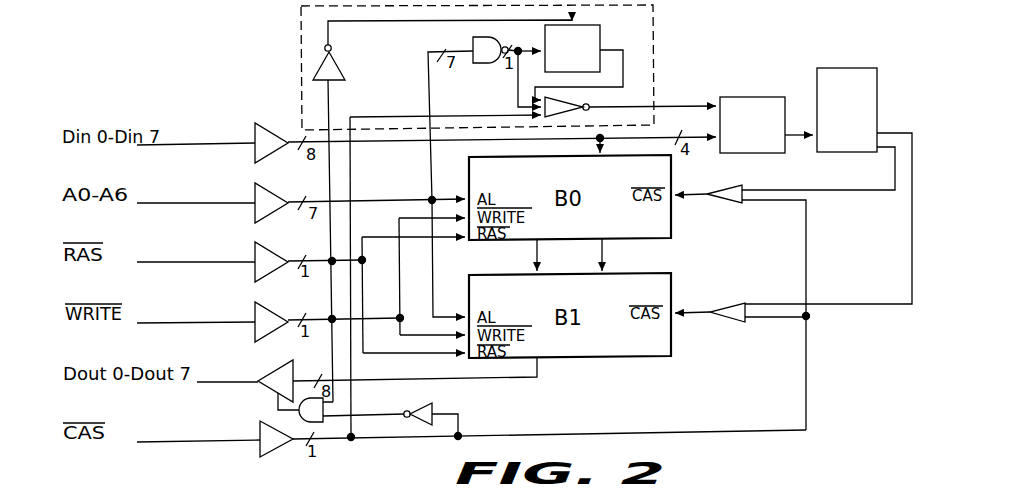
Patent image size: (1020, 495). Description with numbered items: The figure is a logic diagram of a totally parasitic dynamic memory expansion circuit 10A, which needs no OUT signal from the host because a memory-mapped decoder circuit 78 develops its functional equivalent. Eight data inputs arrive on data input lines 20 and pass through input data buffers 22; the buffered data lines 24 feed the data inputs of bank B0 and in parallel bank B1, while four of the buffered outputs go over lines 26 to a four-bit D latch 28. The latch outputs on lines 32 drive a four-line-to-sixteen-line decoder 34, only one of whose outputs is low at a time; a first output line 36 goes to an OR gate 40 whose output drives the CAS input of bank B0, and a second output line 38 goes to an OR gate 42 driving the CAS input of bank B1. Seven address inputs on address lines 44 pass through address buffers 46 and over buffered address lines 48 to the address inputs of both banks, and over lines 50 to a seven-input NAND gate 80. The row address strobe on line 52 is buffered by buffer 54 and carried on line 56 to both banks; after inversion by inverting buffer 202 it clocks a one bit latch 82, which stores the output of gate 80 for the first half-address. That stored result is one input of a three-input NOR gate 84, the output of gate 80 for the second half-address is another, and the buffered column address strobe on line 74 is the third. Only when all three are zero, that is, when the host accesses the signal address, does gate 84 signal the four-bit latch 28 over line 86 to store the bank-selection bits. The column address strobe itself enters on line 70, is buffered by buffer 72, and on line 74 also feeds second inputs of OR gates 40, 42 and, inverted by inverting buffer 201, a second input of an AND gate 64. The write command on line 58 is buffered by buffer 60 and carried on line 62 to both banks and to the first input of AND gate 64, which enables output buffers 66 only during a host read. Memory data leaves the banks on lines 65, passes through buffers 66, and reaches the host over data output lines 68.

The dynamic memory parasitic memory expansion circuit 10A is at (243, 112).
The data input lines 20 is at (198, 144).
The input data buffers 22 is at (263, 127).
The data lines 24 is at (402, 141).
The latch input lines 26 is at (470, 141).
The 4-bit D latch 28 is at (745, 97).
The latch output lines 32 is at (797, 140).
The 4-line-to-16-line decoder 34 is at (878, 80).
The first decoder output line 36 is at (850, 190).
The second decoder output line 38 is at (893, 135).
The OR gate 40 is at (724, 203).
The OR gate 42 is at (733, 303).
The address lines 44 is at (198, 203).
The address buffers 46 is at (266, 193).
The buffered address lines 48 is at (366, 201).
The address lines to NAND gate 50 is at (434, 268).
The row address strobe line 52 is at (198, 262).
The RAS buffer 54 is at (266, 248).
The buffered RAS line 56 is at (322, 264).
The write command line 58 is at (198, 322).
The WRITE buffer 60 is at (266, 310).
The buffered WRITE line 62 is at (398, 316).
The AND gate 64 is at (330, 405).
The data output lines from memory banks 65 is at (465, 378).
The output buffers 66 is at (274, 368).
The data output lines 68 is at (203, 383).
The column address strobe line 70 is at (195, 443).
The CAS buffer 72 is at (262, 425).
The buffered CAS line 74 is at (402, 438).
The decoder circuit 78 is at (298, 22).
The 7 input NAND gate 80 is at (482, 37).
The one bit latch 82 is at (604, 33).
The three input NOR gate 84 is at (580, 105).
The latch clock line 86 is at (693, 104).
The inverting buffer 201 is at (433, 390).
The inverting buffer 202 is at (348, 72).